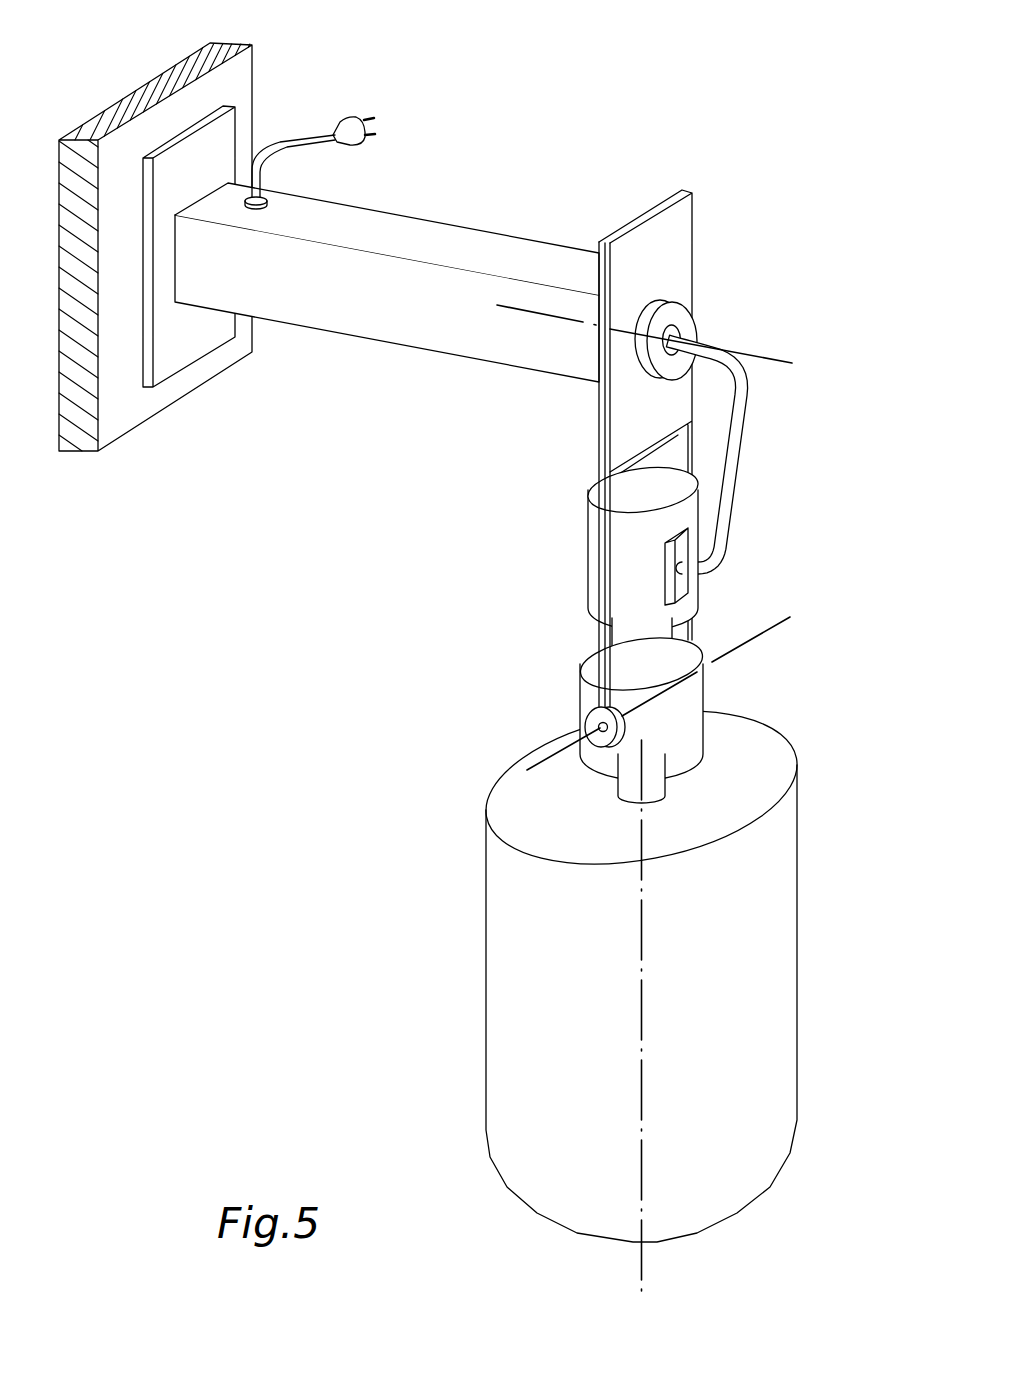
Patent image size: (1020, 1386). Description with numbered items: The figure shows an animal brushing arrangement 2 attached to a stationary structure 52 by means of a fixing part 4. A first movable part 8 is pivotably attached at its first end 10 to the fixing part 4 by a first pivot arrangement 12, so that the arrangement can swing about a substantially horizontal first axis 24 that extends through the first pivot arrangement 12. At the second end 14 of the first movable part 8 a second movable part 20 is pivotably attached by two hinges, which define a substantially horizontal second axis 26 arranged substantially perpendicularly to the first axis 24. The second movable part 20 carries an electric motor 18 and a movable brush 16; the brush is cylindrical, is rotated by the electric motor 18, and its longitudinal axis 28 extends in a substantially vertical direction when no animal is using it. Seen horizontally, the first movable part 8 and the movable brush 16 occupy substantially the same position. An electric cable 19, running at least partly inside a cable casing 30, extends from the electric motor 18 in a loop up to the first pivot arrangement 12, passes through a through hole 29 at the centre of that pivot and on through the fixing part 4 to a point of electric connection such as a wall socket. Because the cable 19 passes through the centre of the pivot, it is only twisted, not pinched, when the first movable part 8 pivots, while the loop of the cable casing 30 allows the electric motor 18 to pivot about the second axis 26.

The animal brushing arrangement 2 is at (439, 646).
The fixing part 4 is at (470, 238).
The first movable part 8 is at (624, 420).
The first end 10 is at (642, 415).
The first pivot arrangement 12 is at (658, 397).
The second end 14 is at (632, 722).
The movable brush 16 is at (445, 962).
The electric motor 18 is at (630, 566).
The electric cable 19 is at (295, 147).
The second movable part 20 is at (683, 710).
The first axis 24 is at (760, 352).
The second axis 26 is at (560, 755).
The longitudinal axis 28 is at (641, 1262).
The through hole 29 is at (675, 335).
The cable casing 30 is at (722, 510).
The stationary structure 52 is at (118, 410).